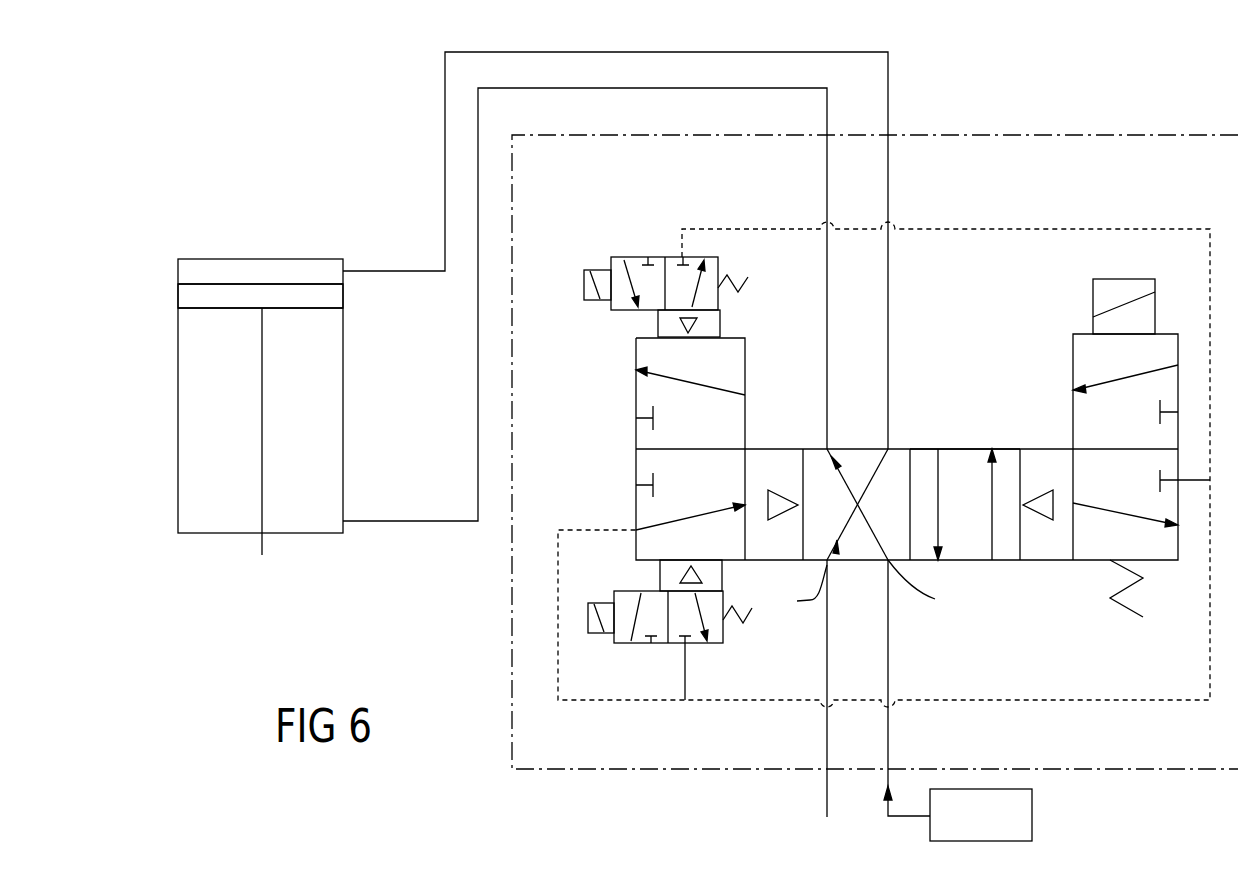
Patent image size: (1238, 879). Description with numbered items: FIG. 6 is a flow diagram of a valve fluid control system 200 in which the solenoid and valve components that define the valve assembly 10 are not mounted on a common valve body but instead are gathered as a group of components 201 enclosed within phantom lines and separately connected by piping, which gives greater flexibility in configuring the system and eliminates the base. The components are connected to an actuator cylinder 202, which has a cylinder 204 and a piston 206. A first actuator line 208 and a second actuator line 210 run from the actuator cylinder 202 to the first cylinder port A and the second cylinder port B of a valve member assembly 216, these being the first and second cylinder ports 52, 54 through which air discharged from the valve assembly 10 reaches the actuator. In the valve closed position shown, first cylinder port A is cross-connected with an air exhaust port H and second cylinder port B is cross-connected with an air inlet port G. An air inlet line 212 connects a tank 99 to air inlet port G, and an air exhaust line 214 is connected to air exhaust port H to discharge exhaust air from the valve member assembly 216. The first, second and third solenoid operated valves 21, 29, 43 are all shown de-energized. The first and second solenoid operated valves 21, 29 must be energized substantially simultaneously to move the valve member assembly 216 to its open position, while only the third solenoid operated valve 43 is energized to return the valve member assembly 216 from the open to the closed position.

The valve assembly 10 is at (1134, 110).
The first solenoid operated valve 21 is at (923, 436).
The second solenoid operated valve 29 is at (656, 257).
The third solenoid operated valve 43 is at (697, 645).
The first cylinder port 52 is at (884, 449).
The second cylinder port 54 is at (828, 449).
The tank 99 is at (1032, 815).
The valve fluid control system 200 is at (1050, 70).
The group of components 201 is at (940, 122).
The actuator cylinder 202 is at (282, 352).
The cylinder 204 is at (230, 334).
The piston 206 is at (206, 291).
The first actuator line 208 is at (368, 271).
The second actuator line 210 is at (432, 521).
The air inlet line 212 is at (888, 776).
The air exhaust line 214 is at (827, 783).
The valve member assembly 216 is at (930, 449).